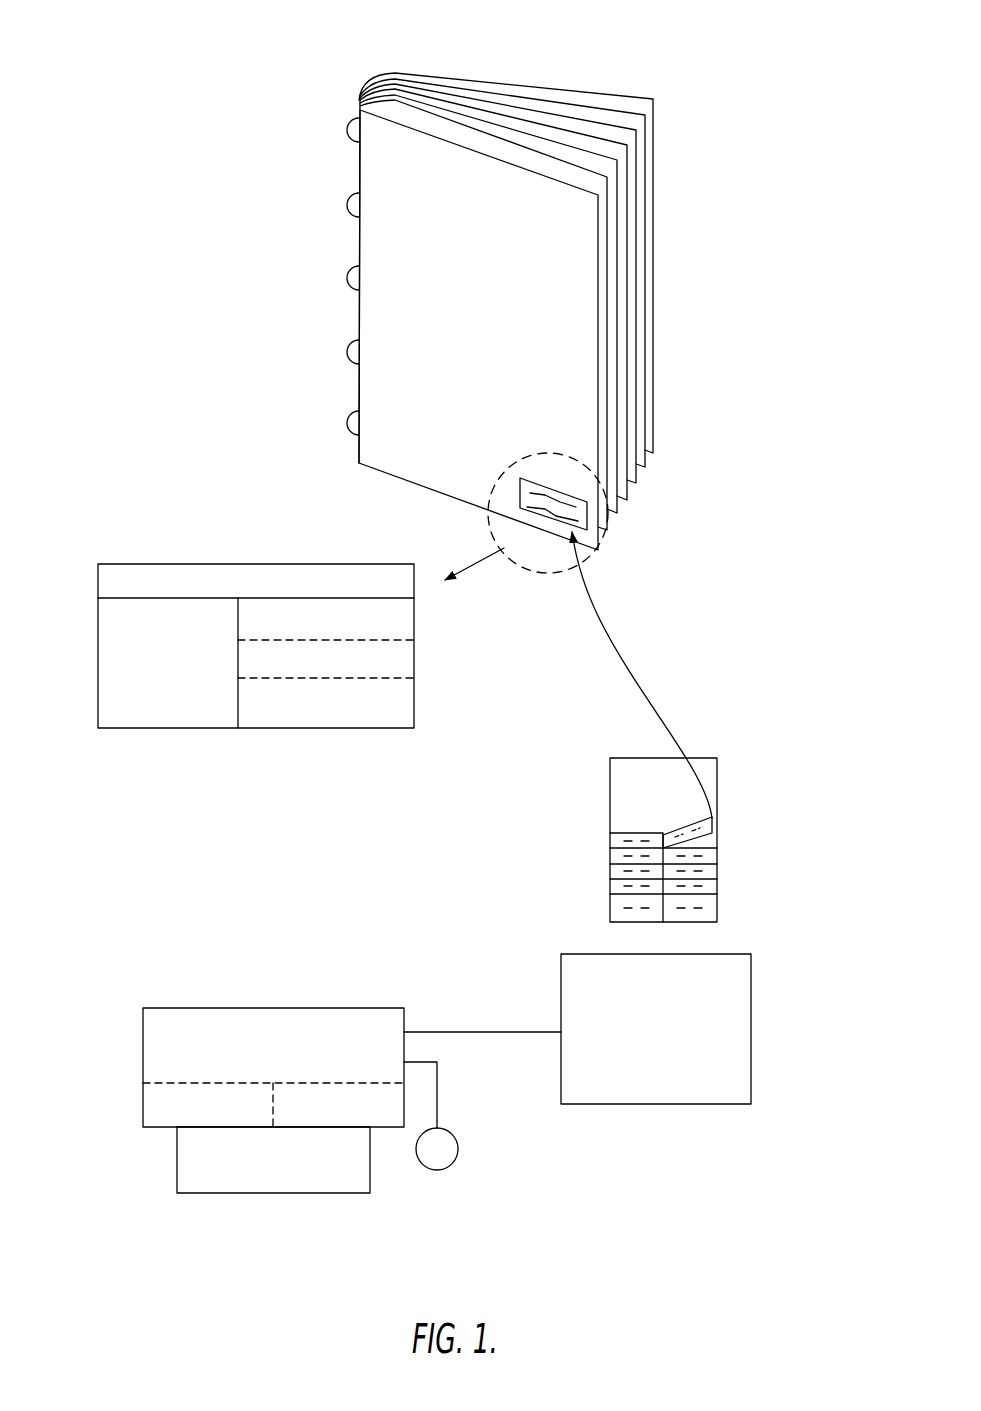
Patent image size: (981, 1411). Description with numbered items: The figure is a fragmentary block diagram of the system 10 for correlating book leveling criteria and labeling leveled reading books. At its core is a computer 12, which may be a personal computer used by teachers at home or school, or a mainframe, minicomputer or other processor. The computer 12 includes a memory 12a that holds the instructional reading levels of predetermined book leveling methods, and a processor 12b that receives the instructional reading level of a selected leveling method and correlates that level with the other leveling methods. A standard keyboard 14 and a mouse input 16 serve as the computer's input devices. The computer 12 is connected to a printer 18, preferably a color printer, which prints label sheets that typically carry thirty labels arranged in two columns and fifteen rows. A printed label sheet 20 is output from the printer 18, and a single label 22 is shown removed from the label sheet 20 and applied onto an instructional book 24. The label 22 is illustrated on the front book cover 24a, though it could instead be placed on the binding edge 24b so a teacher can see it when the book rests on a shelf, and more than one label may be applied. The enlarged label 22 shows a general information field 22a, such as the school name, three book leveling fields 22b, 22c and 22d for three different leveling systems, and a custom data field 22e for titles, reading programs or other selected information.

The system 10 is at (770, 170).
The computer 12 is at (143, 1062).
The memory 12a is at (143, 1113).
The processor 12b is at (390, 1127).
The keyboard 14 is at (370, 1178).
The mouse input 16 is at (460, 1149).
The printer 18 is at (751, 1019).
The label sheet 20 is at (724, 781).
The label 22 is at (590, 508).
The general information field 22a is at (183, 564).
The book leveling field 22b is at (400, 615).
The book leveling field 22c is at (408, 655).
The book leveling field 22d is at (405, 699).
The custom data field 22e is at (102, 682).
The instructional book 24 is at (595, 70).
The front book cover 24a is at (593, 345).
The binding edge 24b is at (360, 96).